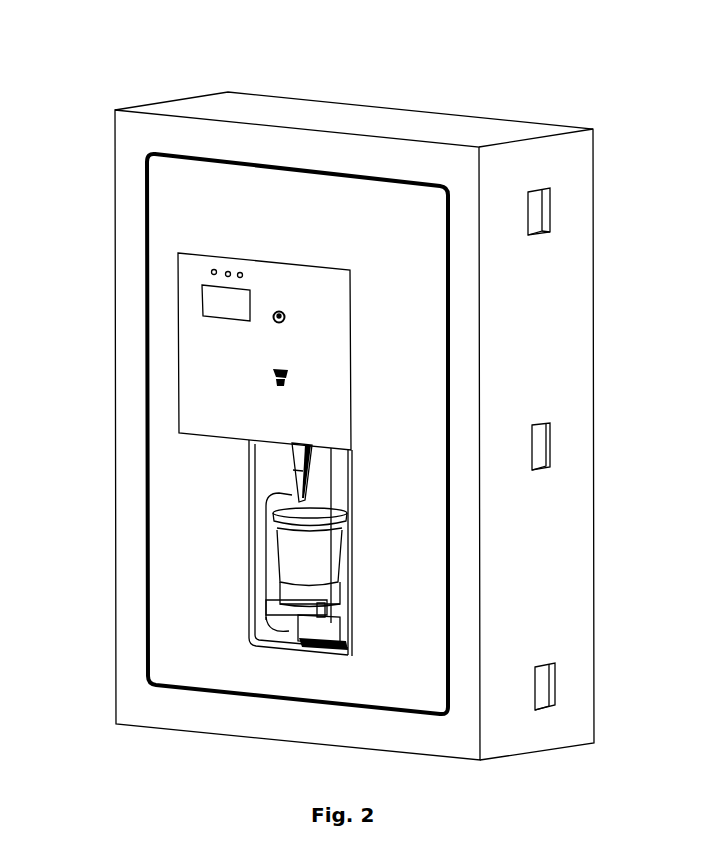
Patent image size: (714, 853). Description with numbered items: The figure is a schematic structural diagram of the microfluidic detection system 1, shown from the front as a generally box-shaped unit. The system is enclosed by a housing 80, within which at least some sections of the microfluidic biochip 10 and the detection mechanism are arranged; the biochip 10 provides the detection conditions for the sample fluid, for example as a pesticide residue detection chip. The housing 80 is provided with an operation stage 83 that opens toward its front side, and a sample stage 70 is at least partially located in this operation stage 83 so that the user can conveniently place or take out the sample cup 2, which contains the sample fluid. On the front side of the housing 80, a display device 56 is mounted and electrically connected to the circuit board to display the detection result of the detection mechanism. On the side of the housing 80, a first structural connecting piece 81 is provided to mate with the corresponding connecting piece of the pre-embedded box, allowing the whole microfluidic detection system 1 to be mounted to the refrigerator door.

The microfluidic detection system 1 is at (60, 47).
The housing 80 is at (506, 110).
The first structural connecting piece 81 is at (541, 208).
The display device 56 is at (284, 280).
The microfluidic biochip 10 is at (297, 462).
The sample cup 2 is at (317, 550).
The sample stage 70 is at (275, 613).
The operation stage 83 is at (323, 626).